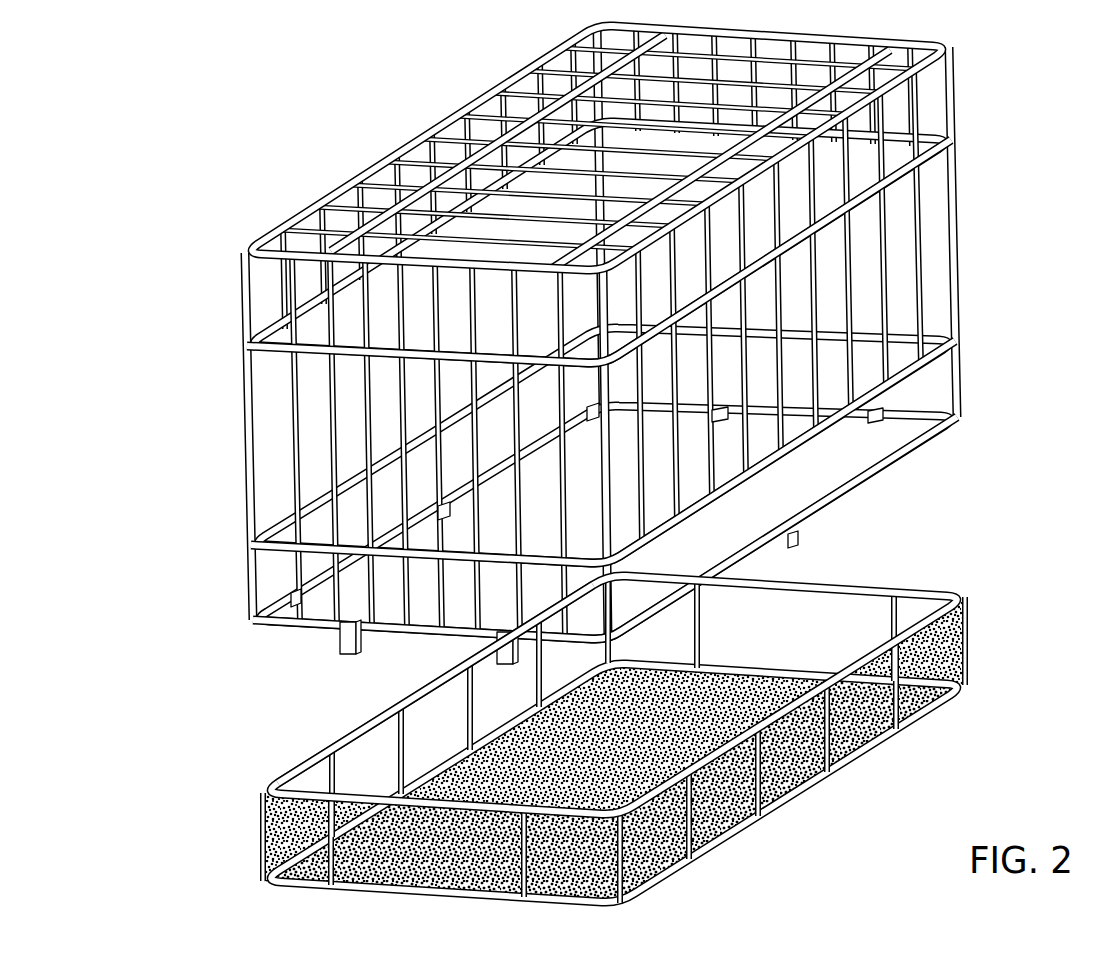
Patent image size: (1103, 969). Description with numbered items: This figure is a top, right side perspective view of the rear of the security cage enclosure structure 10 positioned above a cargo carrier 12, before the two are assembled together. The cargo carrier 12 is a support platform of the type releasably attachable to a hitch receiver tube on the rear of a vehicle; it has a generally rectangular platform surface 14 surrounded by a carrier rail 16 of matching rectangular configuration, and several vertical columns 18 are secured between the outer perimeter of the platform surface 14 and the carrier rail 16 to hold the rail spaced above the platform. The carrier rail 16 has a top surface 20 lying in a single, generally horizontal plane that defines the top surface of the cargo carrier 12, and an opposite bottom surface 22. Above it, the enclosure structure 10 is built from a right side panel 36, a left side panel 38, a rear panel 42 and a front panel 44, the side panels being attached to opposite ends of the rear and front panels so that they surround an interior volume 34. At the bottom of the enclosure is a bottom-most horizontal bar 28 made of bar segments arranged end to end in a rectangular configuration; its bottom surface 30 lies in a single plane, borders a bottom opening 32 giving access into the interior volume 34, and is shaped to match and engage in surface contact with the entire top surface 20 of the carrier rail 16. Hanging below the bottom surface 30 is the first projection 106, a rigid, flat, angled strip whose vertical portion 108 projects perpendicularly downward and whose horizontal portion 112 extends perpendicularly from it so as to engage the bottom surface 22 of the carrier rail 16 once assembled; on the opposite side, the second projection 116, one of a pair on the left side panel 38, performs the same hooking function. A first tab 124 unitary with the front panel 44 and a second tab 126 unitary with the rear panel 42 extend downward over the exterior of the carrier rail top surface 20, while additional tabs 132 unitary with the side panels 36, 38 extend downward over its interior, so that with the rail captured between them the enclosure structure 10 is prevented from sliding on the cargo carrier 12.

The security cage enclosure structure 10 is at (188, 253).
The cargo carrier 12 is at (648, 748).
The platform surface 14 is at (298, 866).
The carrier rail 16 is at (955, 592).
The vertical columns 18 is at (893, 702).
The top surface 20 is at (292, 770).
The bottom surface 22 is at (945, 640).
The bottom bar 28 is at (250, 621).
The bottom surface 30 is at (296, 631).
The bottom opening 32 is at (902, 474).
The interior volume 34 is at (824, 283).
The right side panel 36 is at (255, 451).
The left side panel 38 is at (948, 179).
The rear panel 42 is at (929, 293).
The front panel 44 is at (387, 320).
The first projection 106 is at (385, 666).
The vertical portion 108 is at (351, 644).
The horizontal portion 112 is at (348, 657).
The second projection 116 is at (732, 417).
The first tab 124 is at (446, 517).
The second tab 126 is at (798, 541).
The additional tabs 132 is at (594, 418).